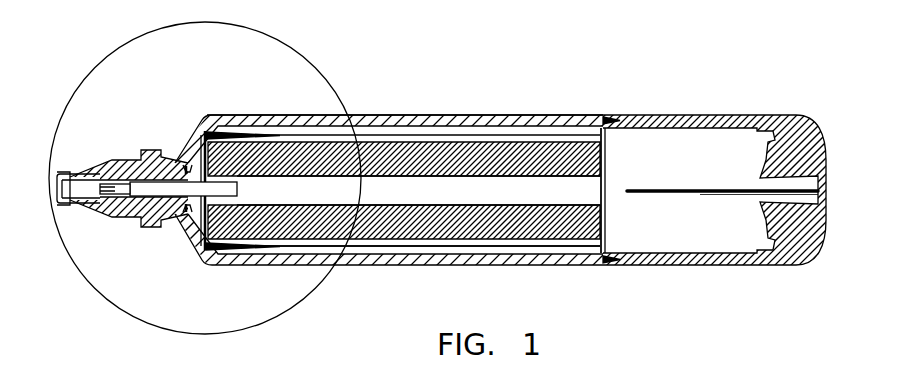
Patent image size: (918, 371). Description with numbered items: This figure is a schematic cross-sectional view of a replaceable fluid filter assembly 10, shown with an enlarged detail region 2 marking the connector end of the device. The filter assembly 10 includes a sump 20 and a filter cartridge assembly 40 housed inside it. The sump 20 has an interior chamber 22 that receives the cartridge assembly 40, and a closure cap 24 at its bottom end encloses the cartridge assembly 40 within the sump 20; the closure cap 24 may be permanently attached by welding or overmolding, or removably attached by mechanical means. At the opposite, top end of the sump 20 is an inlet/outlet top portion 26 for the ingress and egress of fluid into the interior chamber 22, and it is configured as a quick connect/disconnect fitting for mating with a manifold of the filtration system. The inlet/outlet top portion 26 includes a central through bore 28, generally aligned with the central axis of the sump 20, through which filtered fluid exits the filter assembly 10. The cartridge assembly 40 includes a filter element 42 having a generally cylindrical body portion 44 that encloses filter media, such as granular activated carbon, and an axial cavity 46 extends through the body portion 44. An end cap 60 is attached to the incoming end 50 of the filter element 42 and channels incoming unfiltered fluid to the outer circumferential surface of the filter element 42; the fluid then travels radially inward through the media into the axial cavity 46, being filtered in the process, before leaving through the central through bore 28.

The enlarged detail circle 2 is at (273, 33).
The fluid filter assembly 10 is at (483, 100).
The sump 20 is at (377, 265).
The interior chamber 22 is at (537, 135).
The closure cap 24 is at (702, 115).
The inlet/outlet top portion 26 is at (128, 223).
The central through bore 28 is at (67, 177).
The filter cartridge assembly 40 is at (468, 242).
The filter element 42 is at (557, 240).
The cylindrical body portion 44 is at (383, 148).
The axial cavity 46 is at (434, 187).
The incoming end 50 is at (228, 158).
The end cap 60 is at (185, 228).